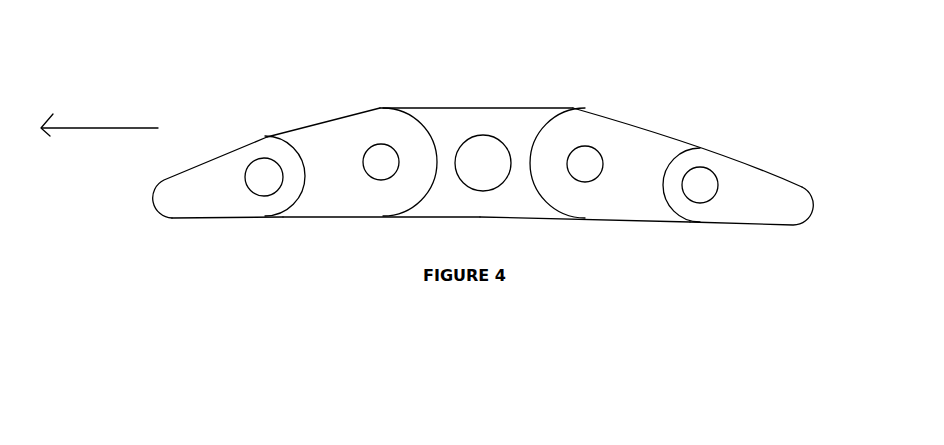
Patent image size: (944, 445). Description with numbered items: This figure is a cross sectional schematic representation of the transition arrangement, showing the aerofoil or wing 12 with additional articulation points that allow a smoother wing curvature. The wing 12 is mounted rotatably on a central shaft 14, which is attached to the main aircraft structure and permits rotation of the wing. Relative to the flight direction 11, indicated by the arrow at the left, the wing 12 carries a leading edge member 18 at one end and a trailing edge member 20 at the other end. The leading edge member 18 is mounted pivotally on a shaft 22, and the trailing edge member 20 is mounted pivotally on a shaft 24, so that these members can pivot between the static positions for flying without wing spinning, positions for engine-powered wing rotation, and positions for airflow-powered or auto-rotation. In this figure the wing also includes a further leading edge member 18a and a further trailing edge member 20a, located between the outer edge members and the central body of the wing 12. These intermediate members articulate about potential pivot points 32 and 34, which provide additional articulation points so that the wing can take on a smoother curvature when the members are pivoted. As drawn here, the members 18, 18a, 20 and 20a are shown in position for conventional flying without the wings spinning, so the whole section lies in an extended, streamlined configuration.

The flight direction 11 is at (99, 117).
The aerofoil or wing 12 is at (482, 117).
The shaft 14 is at (497, 174).
The leading edge member 18 is at (176, 207).
The leading edge member 18a is at (350, 205).
The trailing edge member 20 is at (752, 213).
The trailing edge member 20a is at (638, 213).
The shaft 22 is at (268, 186).
The shaft 24 is at (701, 178).
The pivot point 32 is at (378, 157).
The pivot point 34 is at (585, 160).